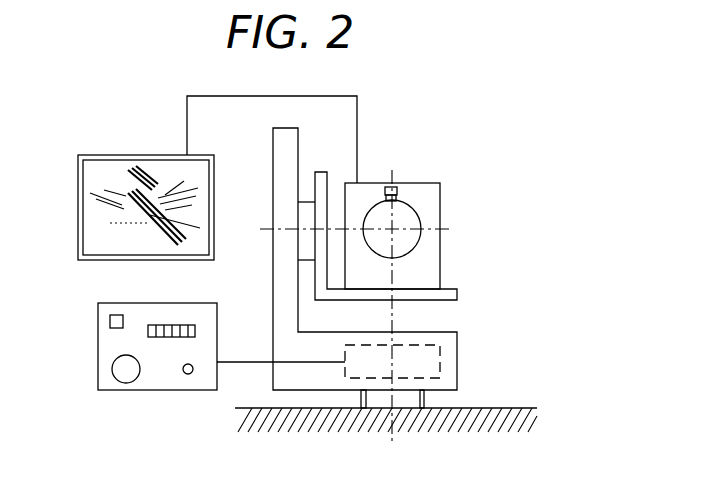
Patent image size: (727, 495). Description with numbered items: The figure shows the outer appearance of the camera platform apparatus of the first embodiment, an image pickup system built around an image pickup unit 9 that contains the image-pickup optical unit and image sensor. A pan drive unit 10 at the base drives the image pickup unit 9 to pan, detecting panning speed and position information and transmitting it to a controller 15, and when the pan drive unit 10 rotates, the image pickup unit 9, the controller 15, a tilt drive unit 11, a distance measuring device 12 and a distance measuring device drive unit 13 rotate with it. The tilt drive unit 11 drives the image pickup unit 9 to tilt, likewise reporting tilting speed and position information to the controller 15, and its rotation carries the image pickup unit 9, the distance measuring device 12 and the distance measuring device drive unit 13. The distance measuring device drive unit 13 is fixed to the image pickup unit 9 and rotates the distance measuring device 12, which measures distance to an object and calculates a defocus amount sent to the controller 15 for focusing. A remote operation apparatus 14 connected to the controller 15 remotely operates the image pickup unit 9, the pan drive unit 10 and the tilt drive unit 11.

The image pickup unit 9 is at (430, 263).
The pan drive unit 10 is at (425, 402).
The tilt drive unit 11 is at (305, 212).
The distance measuring device 12 is at (400, 189).
The distance measuring device drive unit 13 is at (402, 199).
The remote operation apparatus 14 is at (108, 385).
The controller 15 is at (458, 364).